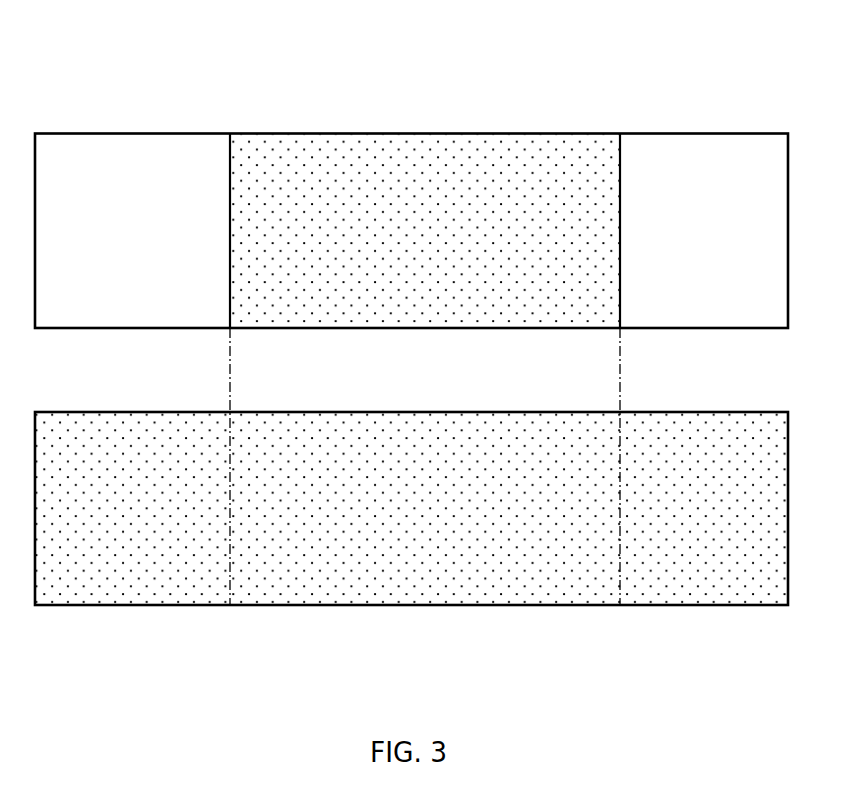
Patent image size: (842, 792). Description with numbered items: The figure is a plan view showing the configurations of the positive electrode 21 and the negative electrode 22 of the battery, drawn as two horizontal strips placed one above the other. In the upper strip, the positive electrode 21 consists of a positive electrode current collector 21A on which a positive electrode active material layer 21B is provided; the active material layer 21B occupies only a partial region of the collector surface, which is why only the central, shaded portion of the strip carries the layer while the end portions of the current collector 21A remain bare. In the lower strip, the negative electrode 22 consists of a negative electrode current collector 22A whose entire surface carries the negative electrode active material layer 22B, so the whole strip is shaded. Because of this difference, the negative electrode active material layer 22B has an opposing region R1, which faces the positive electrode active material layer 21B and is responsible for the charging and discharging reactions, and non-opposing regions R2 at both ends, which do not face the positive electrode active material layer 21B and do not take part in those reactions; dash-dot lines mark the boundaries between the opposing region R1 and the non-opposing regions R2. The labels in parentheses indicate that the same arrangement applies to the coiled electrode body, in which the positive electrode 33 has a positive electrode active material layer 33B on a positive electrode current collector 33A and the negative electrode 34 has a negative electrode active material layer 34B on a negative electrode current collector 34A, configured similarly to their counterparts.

The positive electrode 21 is at (411, 165).
The positive electrode 33 is at (370, 40).
The positive electrode current collector 21A is at (162, 186).
The positive electrode current collector 33A is at (146, 155).
The positive electrode active material layer 21B is at (425, 186).
The positive electrode active material layer 33B is at (313, 155).
The negative electrode 22 is at (411, 576).
The negative electrode 34 is at (368, 692).
The negative electrode current collector 22A is at (161, 510).
The negative electrode current collector 34A is at (148, 588).
The negative electrode active material layer 22B is at (441, 511).
The negative electrode active material layer 34B is at (313, 579).
The opposing region R1 is at (423, 512).
The non-opposing region R2 is at (418, 512).